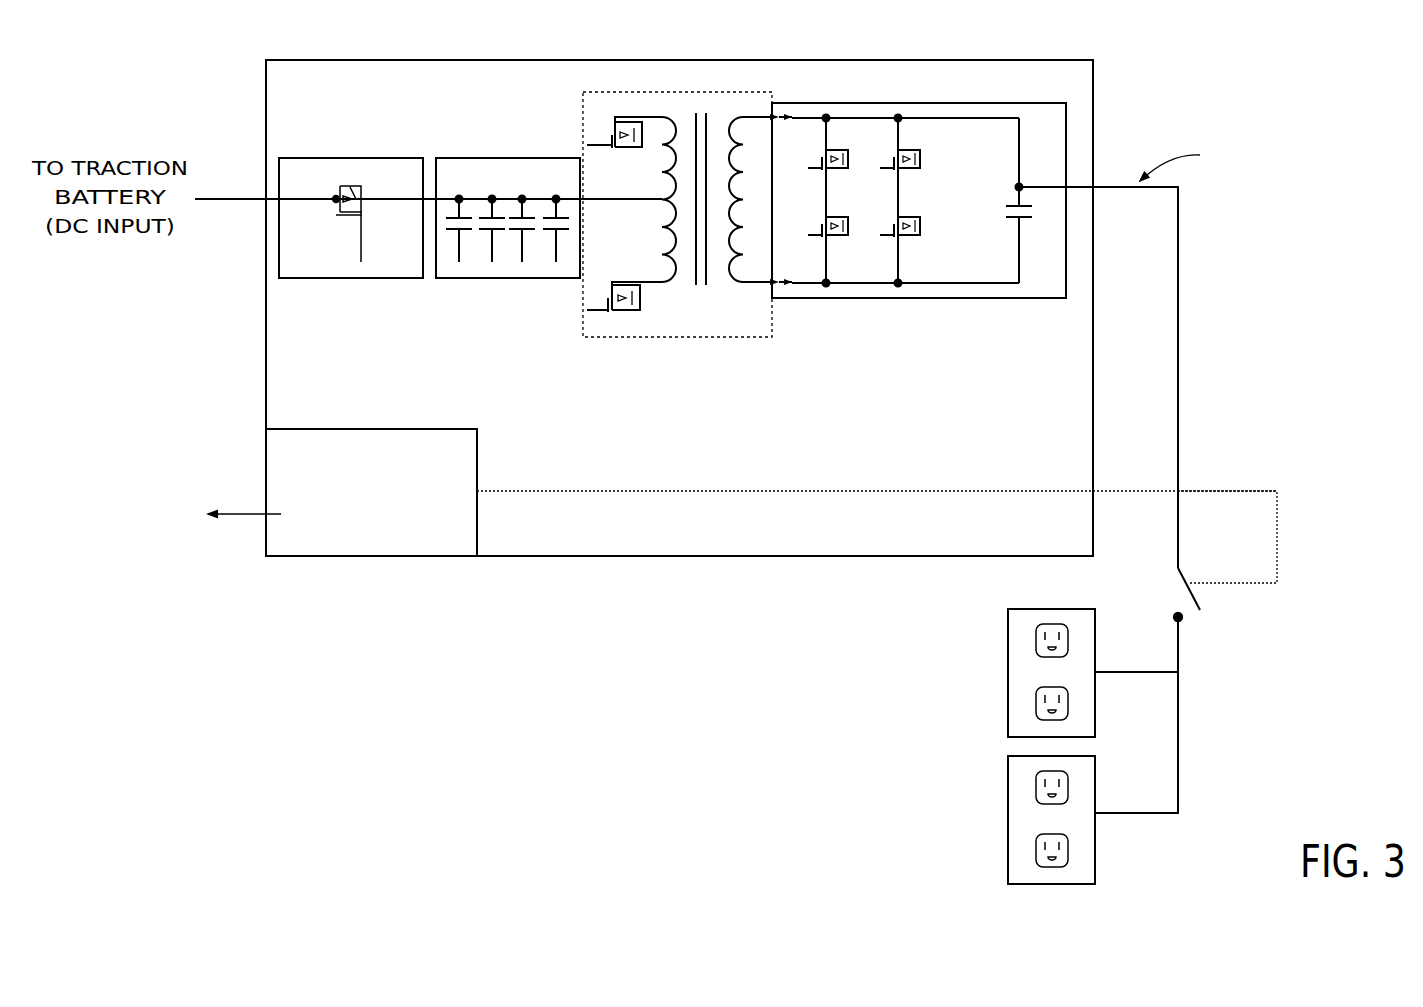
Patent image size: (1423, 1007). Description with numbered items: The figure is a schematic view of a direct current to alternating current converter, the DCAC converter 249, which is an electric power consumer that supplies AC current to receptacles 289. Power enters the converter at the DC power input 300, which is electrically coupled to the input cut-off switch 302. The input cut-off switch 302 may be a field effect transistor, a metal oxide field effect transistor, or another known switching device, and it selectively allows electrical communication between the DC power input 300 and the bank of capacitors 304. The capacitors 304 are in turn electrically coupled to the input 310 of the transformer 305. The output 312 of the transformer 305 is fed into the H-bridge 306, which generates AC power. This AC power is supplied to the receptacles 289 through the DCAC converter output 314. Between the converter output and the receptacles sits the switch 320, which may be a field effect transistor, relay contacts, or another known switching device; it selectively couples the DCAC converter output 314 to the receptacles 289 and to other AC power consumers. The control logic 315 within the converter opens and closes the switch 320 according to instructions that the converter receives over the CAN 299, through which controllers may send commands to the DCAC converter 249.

The DCAC converter 249 is at (428, 59).
The DC power input 300 is at (248, 194).
The input cut-off switch 302 is at (348, 164).
The bank of capacitors 304 is at (508, 164).
The transformer 305 is at (662, 337).
The input of transformer 310 is at (590, 190).
The output of transformer 312 is at (778, 102).
The H-bridge 306 is at (903, 101).
The DCAC converter output 314 is at (1098, 183).
The control logic 315 is at (432, 426).
The CAN 299 is at (222, 518).
The switch 320 is at (1199, 571).
The receptacles 289 is at (1083, 718).